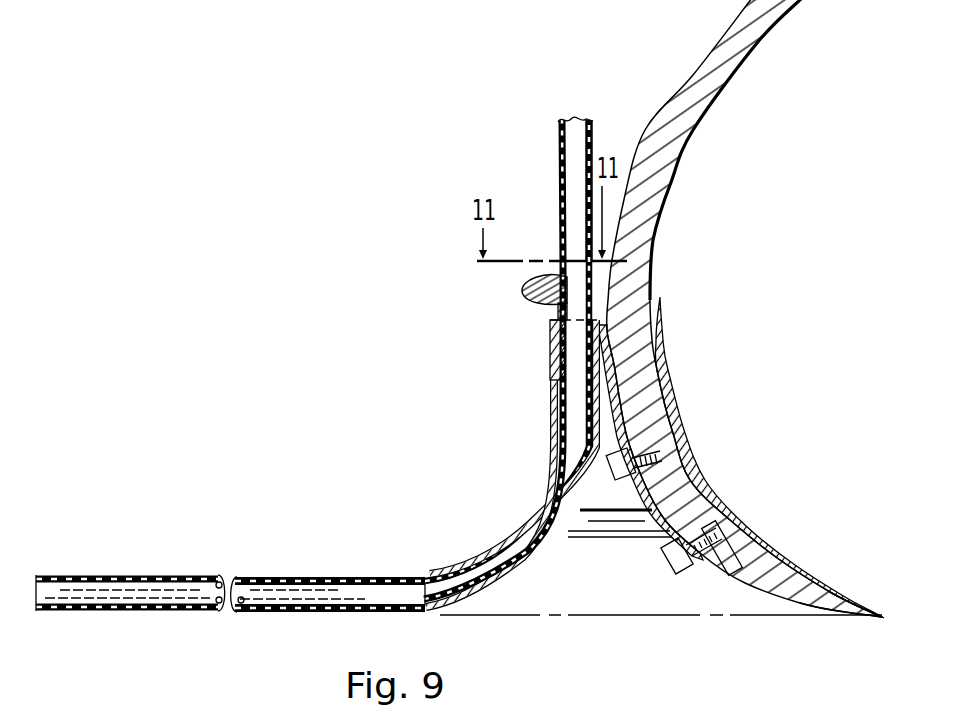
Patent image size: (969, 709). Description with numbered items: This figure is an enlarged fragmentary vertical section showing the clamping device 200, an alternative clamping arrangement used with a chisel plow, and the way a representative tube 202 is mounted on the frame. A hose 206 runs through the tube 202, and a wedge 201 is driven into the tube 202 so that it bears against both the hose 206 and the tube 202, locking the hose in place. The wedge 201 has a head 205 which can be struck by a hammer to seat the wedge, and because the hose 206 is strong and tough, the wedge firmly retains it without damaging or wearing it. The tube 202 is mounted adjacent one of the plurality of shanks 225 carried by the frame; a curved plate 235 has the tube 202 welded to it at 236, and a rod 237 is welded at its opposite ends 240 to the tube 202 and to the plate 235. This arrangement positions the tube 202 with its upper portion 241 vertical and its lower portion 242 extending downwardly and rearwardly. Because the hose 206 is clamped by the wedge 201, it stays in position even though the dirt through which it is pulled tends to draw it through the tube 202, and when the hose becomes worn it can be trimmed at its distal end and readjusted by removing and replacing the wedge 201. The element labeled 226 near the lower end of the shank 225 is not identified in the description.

The clamping device 200 is at (536, 454).
The wedge 201 is at (511, 308).
The tube 202 is at (530, 499).
The head 205 is at (520, 292).
The hose 206 is at (559, 145).
The shank 225 is at (692, 105).
The wall tip 226 is at (818, 596).
The curved plate 235 is at (697, 573).
The weld 236 is at (613, 373).
The rod 237 is at (650, 510).
The opposite ends of rod 240 is at (666, 540).
The upper portion of tube 241 is at (550, 369).
The lower portion of tube 242 is at (488, 545).